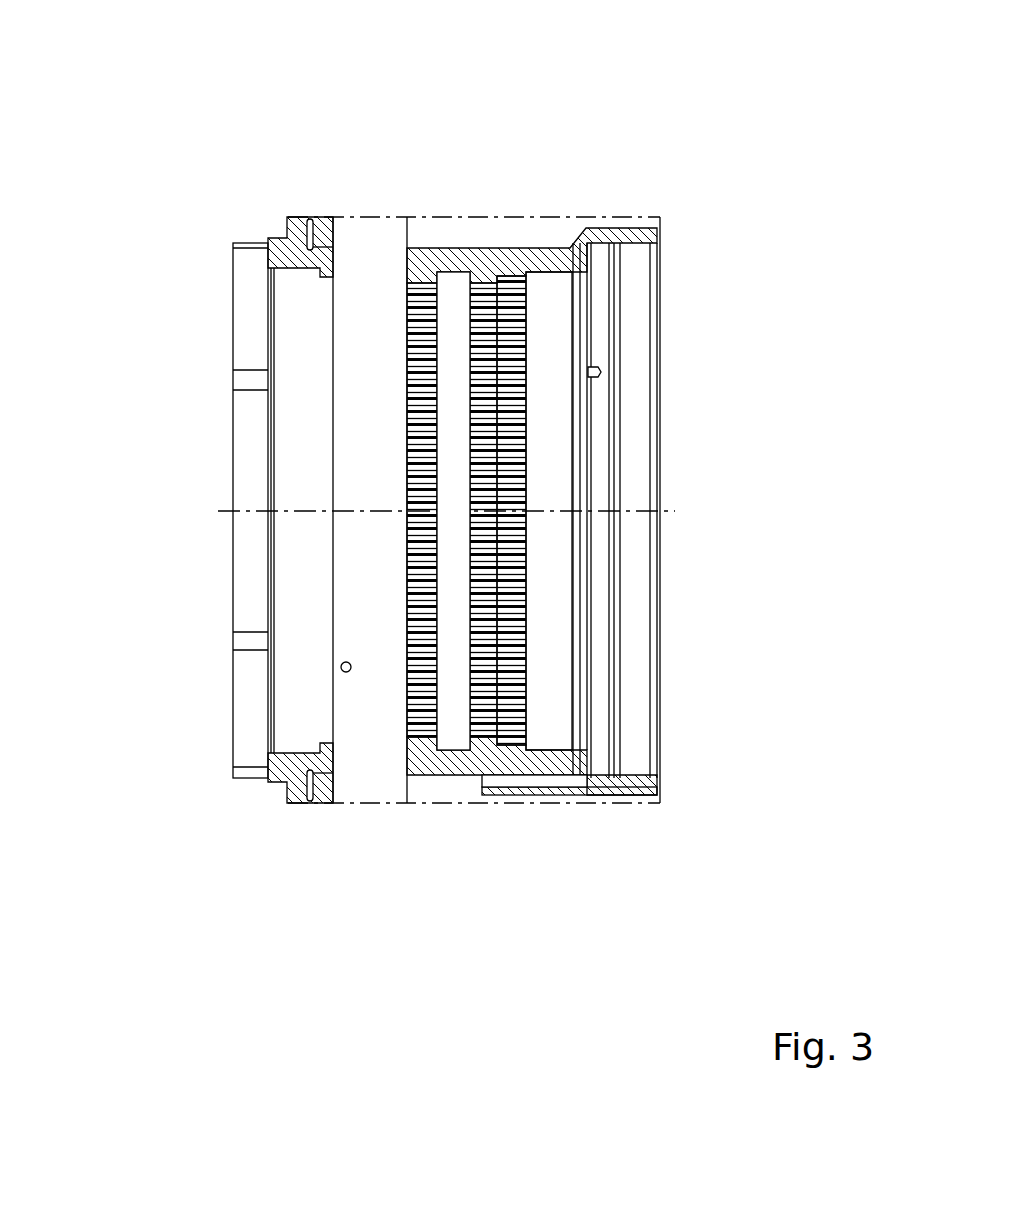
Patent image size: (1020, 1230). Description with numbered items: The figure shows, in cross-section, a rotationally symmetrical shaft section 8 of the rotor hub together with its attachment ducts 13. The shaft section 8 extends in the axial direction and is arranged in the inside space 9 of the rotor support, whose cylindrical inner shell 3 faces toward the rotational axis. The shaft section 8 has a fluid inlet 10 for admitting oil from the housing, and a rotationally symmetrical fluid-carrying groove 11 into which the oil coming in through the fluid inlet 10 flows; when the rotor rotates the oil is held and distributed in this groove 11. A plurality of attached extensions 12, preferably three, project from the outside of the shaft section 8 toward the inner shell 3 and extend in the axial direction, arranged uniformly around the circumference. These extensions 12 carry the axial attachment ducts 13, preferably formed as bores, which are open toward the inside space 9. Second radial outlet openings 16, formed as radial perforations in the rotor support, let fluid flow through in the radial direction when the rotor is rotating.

The inner shell 3 is at (547, 216).
The rotationally symmetrical shaft section 8 is at (452, 380).
The inside space 9 is at (363, 753).
The fluid inlet 10 is at (600, 372).
The rotationally symmetrical fluid-carrying groove 11 is at (577, 451).
The attached extension 12 is at (540, 763).
The attachment duct 13 is at (523, 780).
The second radial outlet opening 16 is at (340, 668).